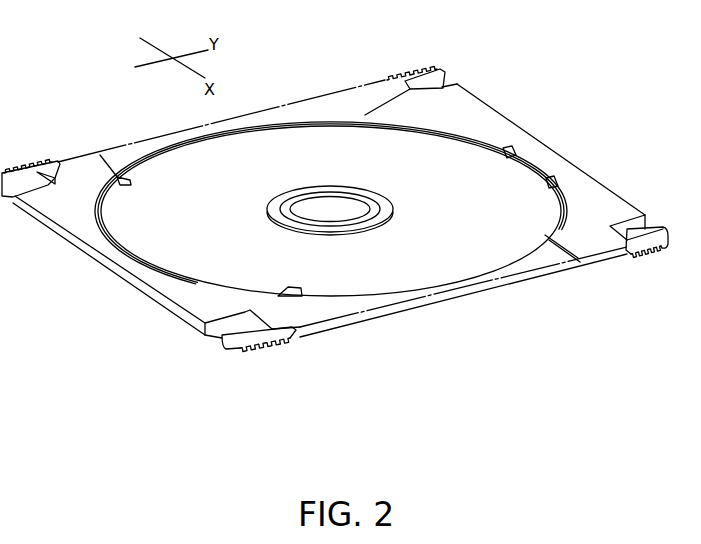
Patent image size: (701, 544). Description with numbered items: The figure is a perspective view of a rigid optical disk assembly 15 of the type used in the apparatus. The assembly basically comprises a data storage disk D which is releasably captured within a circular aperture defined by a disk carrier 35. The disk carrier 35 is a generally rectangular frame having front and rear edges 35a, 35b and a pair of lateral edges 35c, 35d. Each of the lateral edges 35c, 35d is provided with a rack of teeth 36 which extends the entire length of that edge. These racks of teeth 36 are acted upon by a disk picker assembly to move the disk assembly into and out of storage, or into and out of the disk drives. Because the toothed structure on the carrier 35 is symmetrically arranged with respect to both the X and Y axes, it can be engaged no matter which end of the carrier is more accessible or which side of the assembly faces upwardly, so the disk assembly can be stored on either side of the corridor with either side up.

The disk carrier 15 is at (326, 78).
The disk carrier 35 is at (468, 108).
The front edge 35a is at (546, 143).
The rear edge 35b is at (88, 253).
The lateral edge 35c is at (404, 308).
The lateral edge 35d is at (228, 117).
The rack of teeth 36 is at (21, 163).
The data storage disk D is at (449, 212).